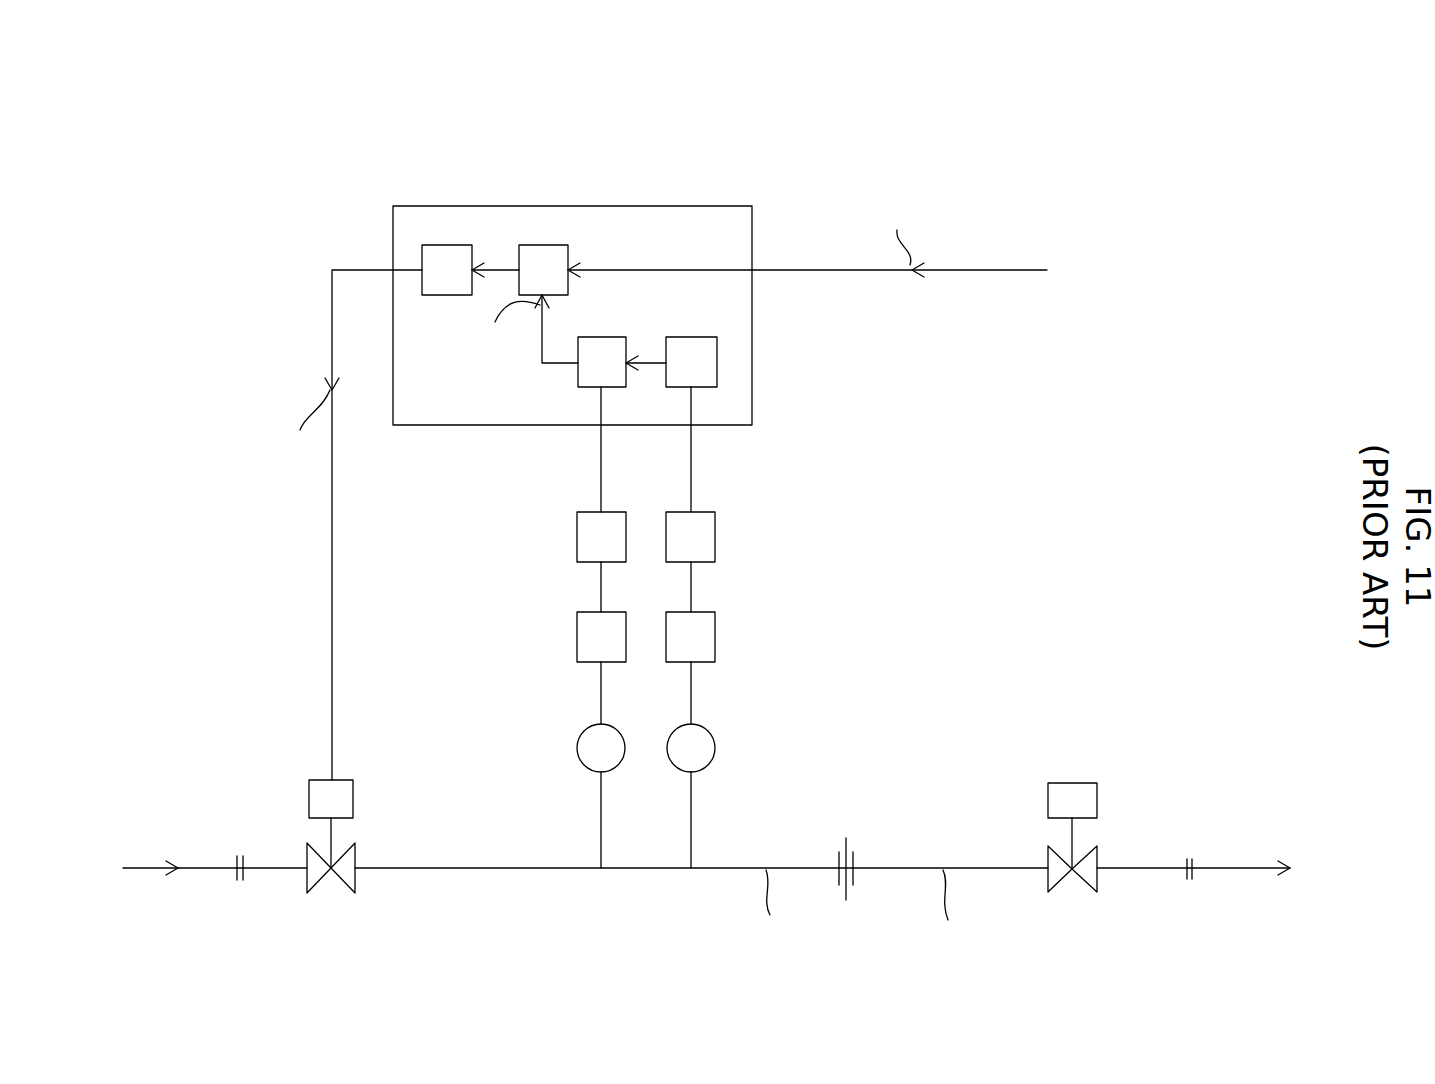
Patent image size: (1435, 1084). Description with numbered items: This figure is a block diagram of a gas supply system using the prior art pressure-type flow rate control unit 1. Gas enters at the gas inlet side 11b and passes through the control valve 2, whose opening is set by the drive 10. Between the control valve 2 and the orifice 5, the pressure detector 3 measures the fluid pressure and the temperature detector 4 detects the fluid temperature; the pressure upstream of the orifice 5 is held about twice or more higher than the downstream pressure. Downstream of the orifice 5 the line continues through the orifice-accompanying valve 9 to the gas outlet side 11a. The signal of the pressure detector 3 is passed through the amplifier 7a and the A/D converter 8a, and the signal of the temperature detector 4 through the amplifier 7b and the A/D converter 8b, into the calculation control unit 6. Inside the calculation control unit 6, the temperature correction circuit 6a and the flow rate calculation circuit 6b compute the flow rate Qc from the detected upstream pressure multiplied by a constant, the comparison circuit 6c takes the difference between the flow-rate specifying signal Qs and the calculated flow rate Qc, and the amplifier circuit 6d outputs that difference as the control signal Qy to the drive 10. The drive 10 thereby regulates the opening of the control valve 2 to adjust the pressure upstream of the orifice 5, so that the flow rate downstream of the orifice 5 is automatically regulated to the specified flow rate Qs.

The pressure-type flow rate control unit 1 is at (280, 220).
The calculation control unit 6 is at (613, 206).
The temperature correction circuit 6a is at (691, 362).
The flow rate calculation circuit 6b is at (602, 362).
The comparison circuit 6c is at (543, 270).
The amplifier circuit 6d is at (447, 270).
The A/D converter 8a is at (601, 537).
The A/D converter 8b is at (690, 537).
The amplifier 7a is at (601, 637).
The amplifier 7b is at (690, 637).
The pressure detector 3 is at (576, 748).
The temperature detector 4 is at (715, 750).
The drive 10 is at (345, 800).
The control valve 2 is at (355, 855).
The gas inlet side 11b is at (246, 875).
The orifice 5 is at (858, 868).
The orifice-accompanying valve 9 is at (1090, 888).
The gas outlet side 11a is at (1183, 878).